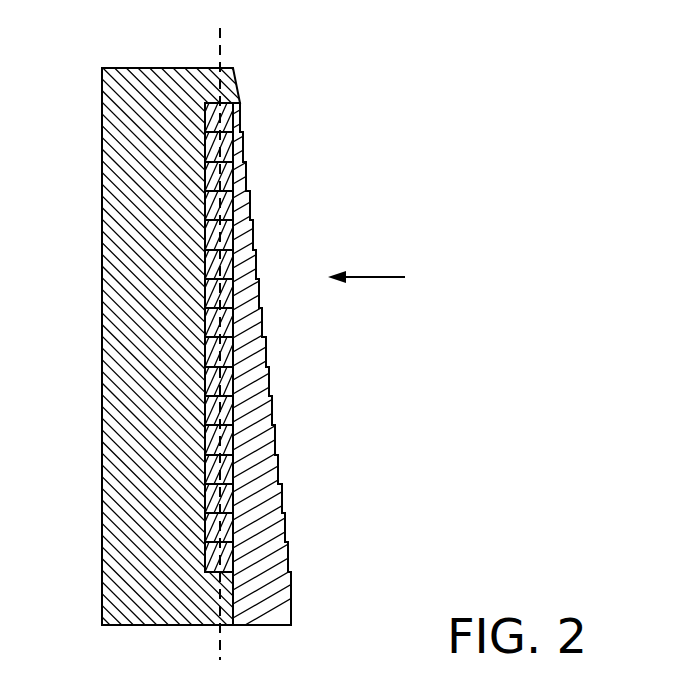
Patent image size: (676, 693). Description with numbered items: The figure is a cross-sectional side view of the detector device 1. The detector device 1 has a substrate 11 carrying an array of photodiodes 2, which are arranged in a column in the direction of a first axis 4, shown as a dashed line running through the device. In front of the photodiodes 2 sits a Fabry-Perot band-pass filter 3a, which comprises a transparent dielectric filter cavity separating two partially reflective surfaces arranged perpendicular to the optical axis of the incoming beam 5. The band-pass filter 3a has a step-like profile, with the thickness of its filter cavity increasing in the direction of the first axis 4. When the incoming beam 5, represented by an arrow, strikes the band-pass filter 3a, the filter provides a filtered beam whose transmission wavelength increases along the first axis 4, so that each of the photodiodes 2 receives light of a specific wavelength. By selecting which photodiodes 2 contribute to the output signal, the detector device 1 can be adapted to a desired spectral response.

The detector device 1 is at (121, 38).
The substrate 11 is at (122, 83).
The photodiodes 2 is at (207, 120).
The Fabry-Perot band-pass filter 3a is at (243, 238).
The first axis 4 is at (220, 43).
The incoming beam 5 is at (375, 278).